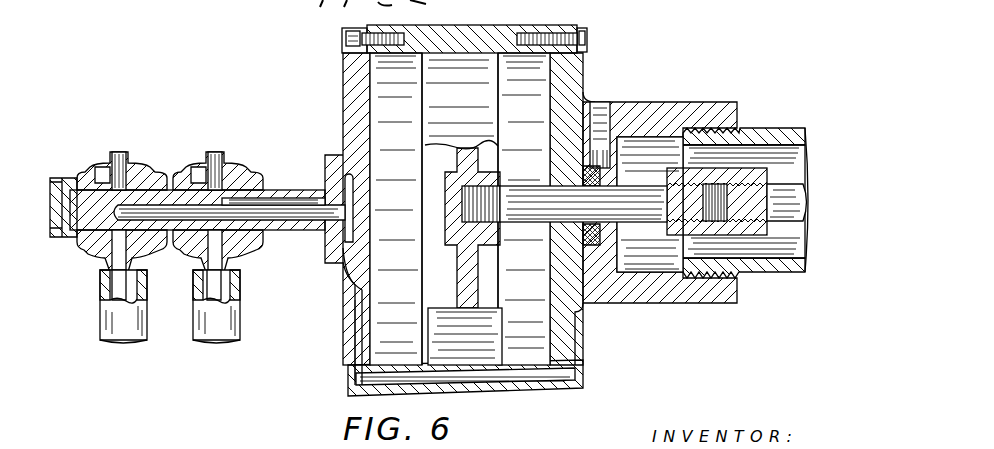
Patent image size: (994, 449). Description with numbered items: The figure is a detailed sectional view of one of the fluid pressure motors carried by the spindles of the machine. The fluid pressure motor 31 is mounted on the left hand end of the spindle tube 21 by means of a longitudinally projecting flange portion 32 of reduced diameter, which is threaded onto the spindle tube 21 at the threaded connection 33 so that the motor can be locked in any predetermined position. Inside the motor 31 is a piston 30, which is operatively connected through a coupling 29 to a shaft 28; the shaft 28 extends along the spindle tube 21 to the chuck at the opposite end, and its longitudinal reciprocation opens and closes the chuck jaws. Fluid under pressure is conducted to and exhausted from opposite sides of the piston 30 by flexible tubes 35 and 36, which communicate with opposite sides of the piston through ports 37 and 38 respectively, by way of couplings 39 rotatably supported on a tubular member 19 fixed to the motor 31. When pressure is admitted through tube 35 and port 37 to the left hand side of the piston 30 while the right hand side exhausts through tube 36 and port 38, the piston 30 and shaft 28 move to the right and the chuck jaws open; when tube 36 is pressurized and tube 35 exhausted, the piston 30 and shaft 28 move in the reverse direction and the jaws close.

The tubular member 19 is at (90, 182).
The couplings 39 is at (198, 165).
The port 37 is at (300, 191).
The fluid pressure motor 31 is at (487, 30).
The piston 30 is at (466, 127).
The flange portion 32 is at (688, 92).
The threaded connection 33 is at (726, 168).
The coupling 29 is at (752, 182).
The shaft 28 is at (772, 272).
The spindle tube 21 is at (770, 270).
The flexible tube 35 is at (98, 320).
The flexible tube 36 is at (240, 320).
The port 38 is at (355, 330).